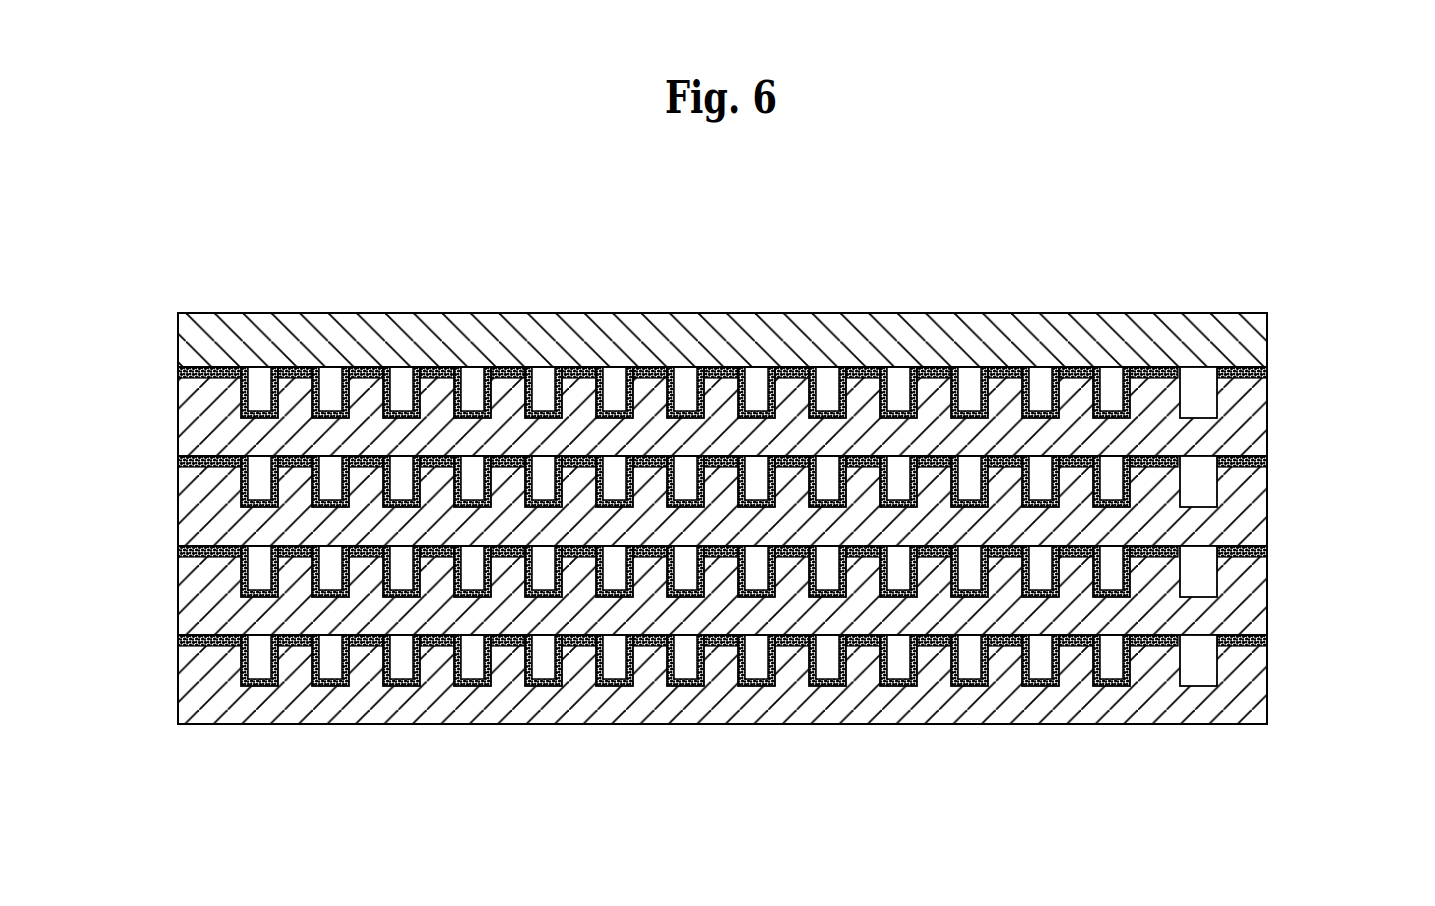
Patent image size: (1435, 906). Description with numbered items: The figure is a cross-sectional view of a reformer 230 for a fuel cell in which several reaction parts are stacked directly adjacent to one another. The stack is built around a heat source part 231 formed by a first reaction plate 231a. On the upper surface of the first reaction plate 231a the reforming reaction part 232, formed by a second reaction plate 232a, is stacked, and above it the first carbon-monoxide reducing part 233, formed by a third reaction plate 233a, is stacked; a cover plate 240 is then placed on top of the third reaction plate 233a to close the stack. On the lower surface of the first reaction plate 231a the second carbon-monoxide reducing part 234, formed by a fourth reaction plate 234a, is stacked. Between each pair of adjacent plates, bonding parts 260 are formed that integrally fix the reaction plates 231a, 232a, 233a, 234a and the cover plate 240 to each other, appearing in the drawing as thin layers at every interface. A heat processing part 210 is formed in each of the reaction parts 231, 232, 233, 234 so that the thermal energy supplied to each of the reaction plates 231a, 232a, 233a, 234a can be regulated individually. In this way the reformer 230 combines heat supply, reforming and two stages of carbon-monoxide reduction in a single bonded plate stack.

The reformer 230 is at (750, 212).
The cover plate 240 is at (178, 333).
The first carbon-monoxide reducing part 233 is at (733, 415).
The third reaction plate 233a is at (178, 411).
The reforming reaction part 232 is at (736, 503).
The second reaction plate 232a is at (178, 501).
The heat source part 231 is at (736, 596).
The first reaction plate 231a is at (178, 591).
The second carbon-monoxide reducing part 234 is at (736, 687).
The fourth reaction plate 234a is at (178, 680).
The bonding part 260 is at (674, 371).
The heat processing part 210 is at (1221, 399).